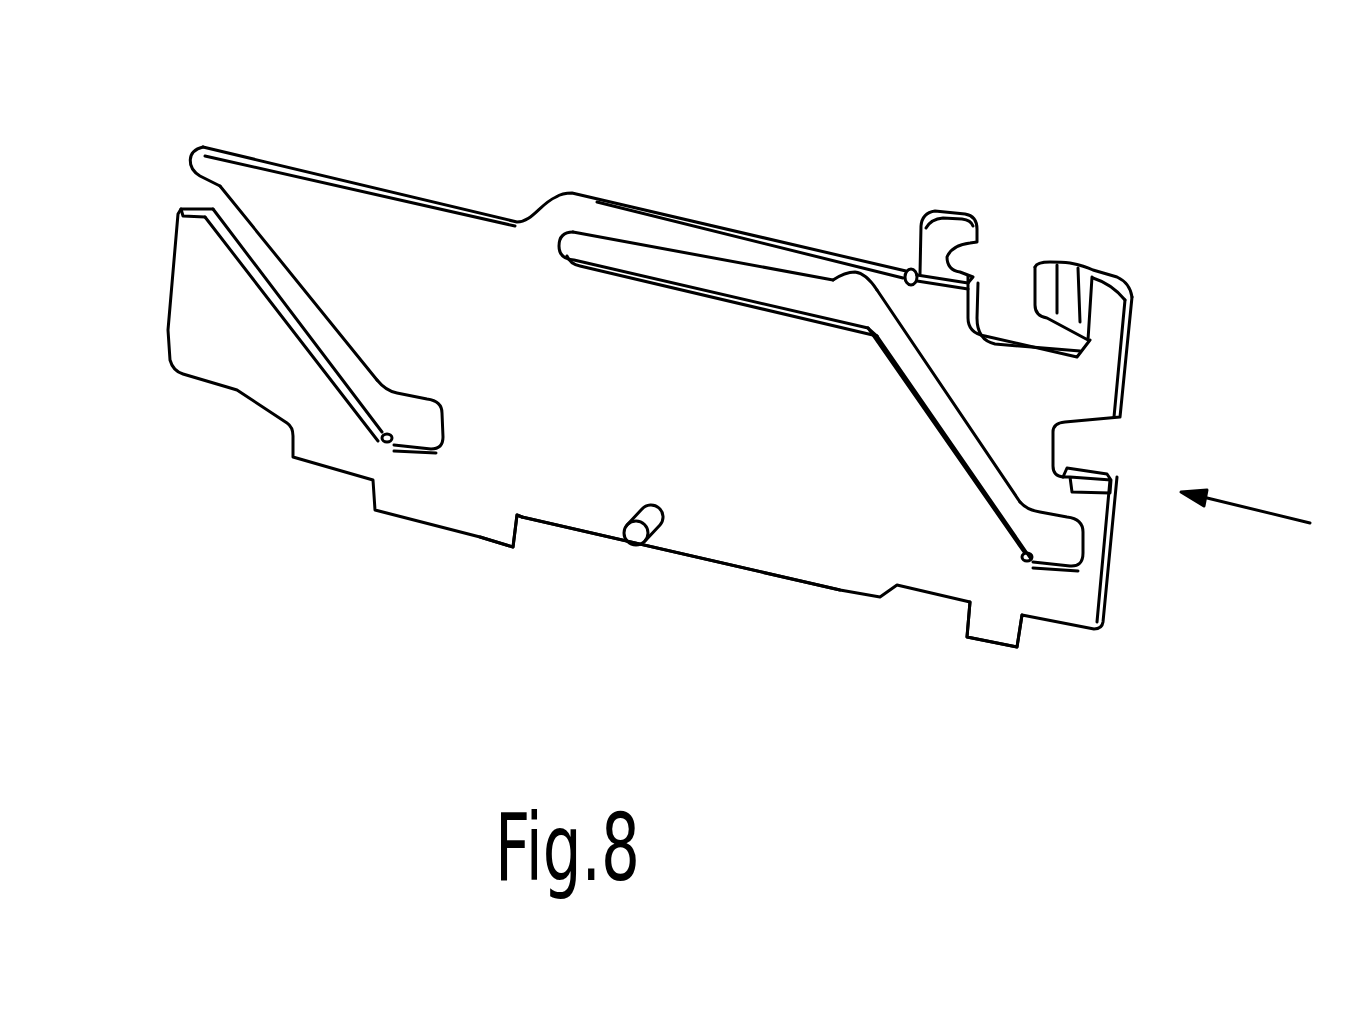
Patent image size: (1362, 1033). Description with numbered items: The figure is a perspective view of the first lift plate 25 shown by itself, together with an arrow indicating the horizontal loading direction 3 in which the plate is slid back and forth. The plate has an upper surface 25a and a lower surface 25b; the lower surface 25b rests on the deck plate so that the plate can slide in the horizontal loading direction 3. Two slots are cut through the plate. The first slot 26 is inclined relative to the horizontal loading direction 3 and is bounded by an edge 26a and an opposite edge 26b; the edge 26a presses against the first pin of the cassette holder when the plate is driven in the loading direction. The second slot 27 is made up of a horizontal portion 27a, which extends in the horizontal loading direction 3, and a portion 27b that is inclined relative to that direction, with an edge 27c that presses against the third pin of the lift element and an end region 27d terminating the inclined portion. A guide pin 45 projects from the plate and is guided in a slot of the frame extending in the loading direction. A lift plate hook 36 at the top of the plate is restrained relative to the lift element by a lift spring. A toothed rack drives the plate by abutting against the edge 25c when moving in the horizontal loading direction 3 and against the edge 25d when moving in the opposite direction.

The horizontal loading direction 3 is at (1264, 522).
The first lift plate 25 is at (509, 457).
The upper surface 25a is at (682, 218).
The lower surface 25b is at (757, 573).
The edge 25c is at (527, 532).
The edge 25d is at (965, 615).
The first slot 26 is at (281, 271).
The edge of the first slot 26a is at (357, 356).
The lower edge of first guide slot 26b is at (291, 317).
The second slot 27 is at (868, 334).
The horizontal portion 27a is at (677, 268).
The inclined portion 27b is at (960, 425).
The edge of the second slot 27c is at (941, 378).
The end of second guide slot 27d is at (987, 515).
The lift plate hook 36 is at (947, 235).
The guide pin 45 is at (654, 508).